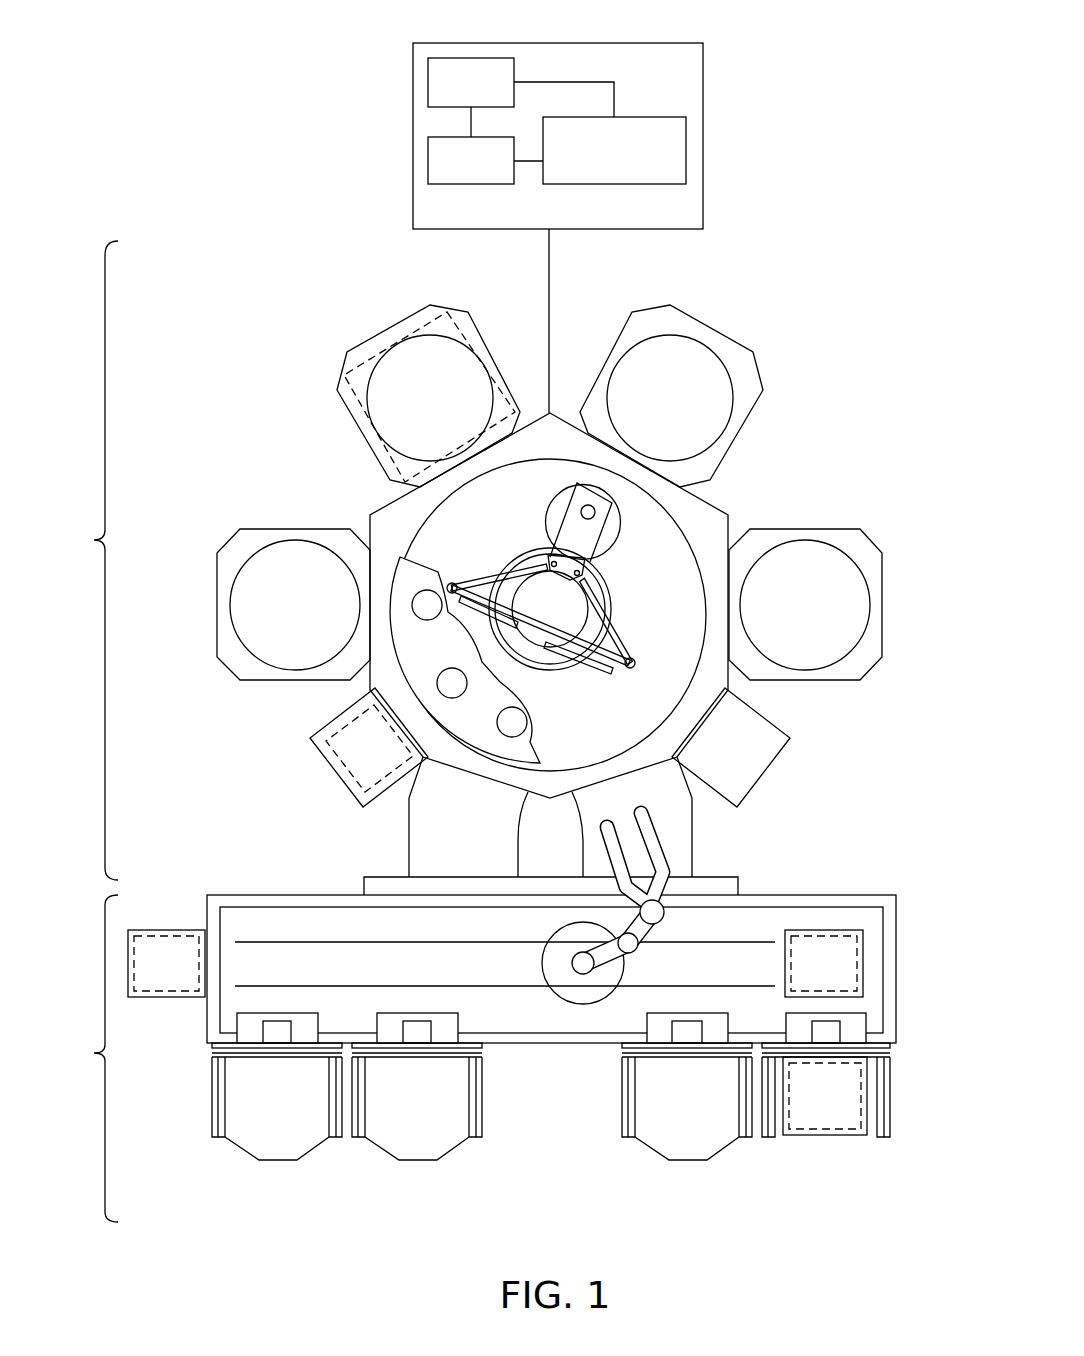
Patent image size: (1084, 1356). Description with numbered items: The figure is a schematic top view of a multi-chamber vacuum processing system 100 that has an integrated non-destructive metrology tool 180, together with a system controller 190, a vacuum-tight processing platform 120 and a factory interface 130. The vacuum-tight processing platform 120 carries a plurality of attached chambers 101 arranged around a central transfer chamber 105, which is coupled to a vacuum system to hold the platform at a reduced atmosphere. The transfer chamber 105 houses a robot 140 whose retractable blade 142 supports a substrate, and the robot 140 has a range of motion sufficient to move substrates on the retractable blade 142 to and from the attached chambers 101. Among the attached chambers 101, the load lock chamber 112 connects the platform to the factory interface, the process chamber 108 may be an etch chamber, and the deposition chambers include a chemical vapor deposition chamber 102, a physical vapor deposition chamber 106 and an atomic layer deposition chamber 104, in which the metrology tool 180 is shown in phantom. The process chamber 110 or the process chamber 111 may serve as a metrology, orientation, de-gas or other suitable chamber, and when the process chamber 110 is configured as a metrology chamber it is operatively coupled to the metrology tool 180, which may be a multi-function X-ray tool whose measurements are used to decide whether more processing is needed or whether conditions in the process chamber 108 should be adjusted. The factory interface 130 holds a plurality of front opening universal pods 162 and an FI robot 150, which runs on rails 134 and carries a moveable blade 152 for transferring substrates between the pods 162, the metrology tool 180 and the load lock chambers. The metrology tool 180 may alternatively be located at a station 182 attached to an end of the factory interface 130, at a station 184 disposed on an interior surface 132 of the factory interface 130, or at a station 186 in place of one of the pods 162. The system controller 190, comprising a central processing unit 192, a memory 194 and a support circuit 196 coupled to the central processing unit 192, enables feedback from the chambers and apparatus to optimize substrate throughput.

The multi-chamber vacuum processing system 100 is at (843, 337).
The attached chambers 101 is at (528, 576).
The chemical vapor deposition chamber 102 is at (872, 668).
The atomic layer deposition chamber 104 is at (348, 410).
The transfer chamber 105 is at (566, 709).
The physical vapor deposition chamber 106 is at (750, 412).
The process chamber 108 is at (266, 528).
The process chamber 110 is at (332, 731).
The process chamber 111 is at (768, 774).
The load lock chamber 112 is at (409, 853).
The vacuum-tight processing platform 120 is at (476, 560).
The factory interface 130 is at (499, 1017).
The interior surface 132 is at (551, 944).
The rails 134 is at (329, 943).
The robot 140 is at (622, 662).
The retractable blade 142 is at (568, 507).
The FI robot 150 is at (620, 908).
The moveable blade 152 is at (607, 856).
The front opening universal pods 162 is at (277, 1162).
The metrology tool 180 is at (385, 474).
The station 182 is at (157, 998).
The station 184 is at (864, 952).
The station 186 is at (823, 1136).
The system controller 190 is at (636, 43).
The central processing unit 192 is at (482, 58).
The memory 194 is at (428, 150).
The support circuit 196 is at (655, 117).